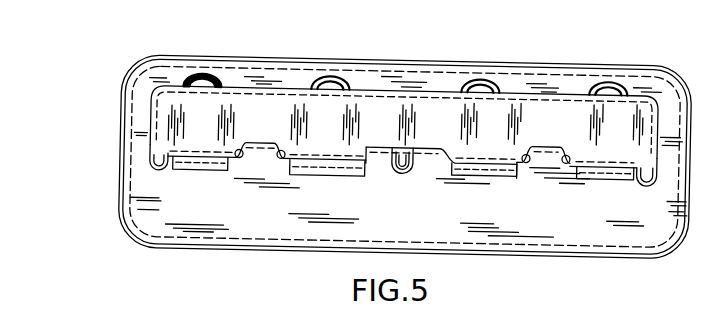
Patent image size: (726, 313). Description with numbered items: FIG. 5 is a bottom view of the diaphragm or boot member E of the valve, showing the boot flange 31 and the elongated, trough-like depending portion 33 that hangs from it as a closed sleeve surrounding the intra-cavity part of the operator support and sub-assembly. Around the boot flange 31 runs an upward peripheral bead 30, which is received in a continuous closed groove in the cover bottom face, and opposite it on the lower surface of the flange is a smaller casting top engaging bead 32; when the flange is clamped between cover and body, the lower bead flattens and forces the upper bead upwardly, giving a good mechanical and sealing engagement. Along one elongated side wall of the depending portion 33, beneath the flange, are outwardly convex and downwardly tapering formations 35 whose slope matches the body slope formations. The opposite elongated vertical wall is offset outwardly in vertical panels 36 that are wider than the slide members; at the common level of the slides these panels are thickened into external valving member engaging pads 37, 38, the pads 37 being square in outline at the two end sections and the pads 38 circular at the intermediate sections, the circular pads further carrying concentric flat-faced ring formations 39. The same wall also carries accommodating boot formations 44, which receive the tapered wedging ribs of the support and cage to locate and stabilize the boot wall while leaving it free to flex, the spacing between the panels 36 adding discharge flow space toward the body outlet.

The cover assembly E is at (112, 146).
The upward peripheral bead 30 is at (394, 66).
The boot flange 31 is at (274, 80).
The casting top engaging bead 32 is at (533, 65).
The depending portion 33 is at (147, 117).
The outwardly convex and downwardly tapering formations 35 is at (204, 77).
The vertical panels 36 is at (244, 148).
The valving member engaging pads 37 is at (202, 170).
The valving member engaging pads 38 is at (323, 178).
The concentric flat-faced ring formations 39 is at (366, 176).
The accommodating boot formations 44 is at (153, 165).